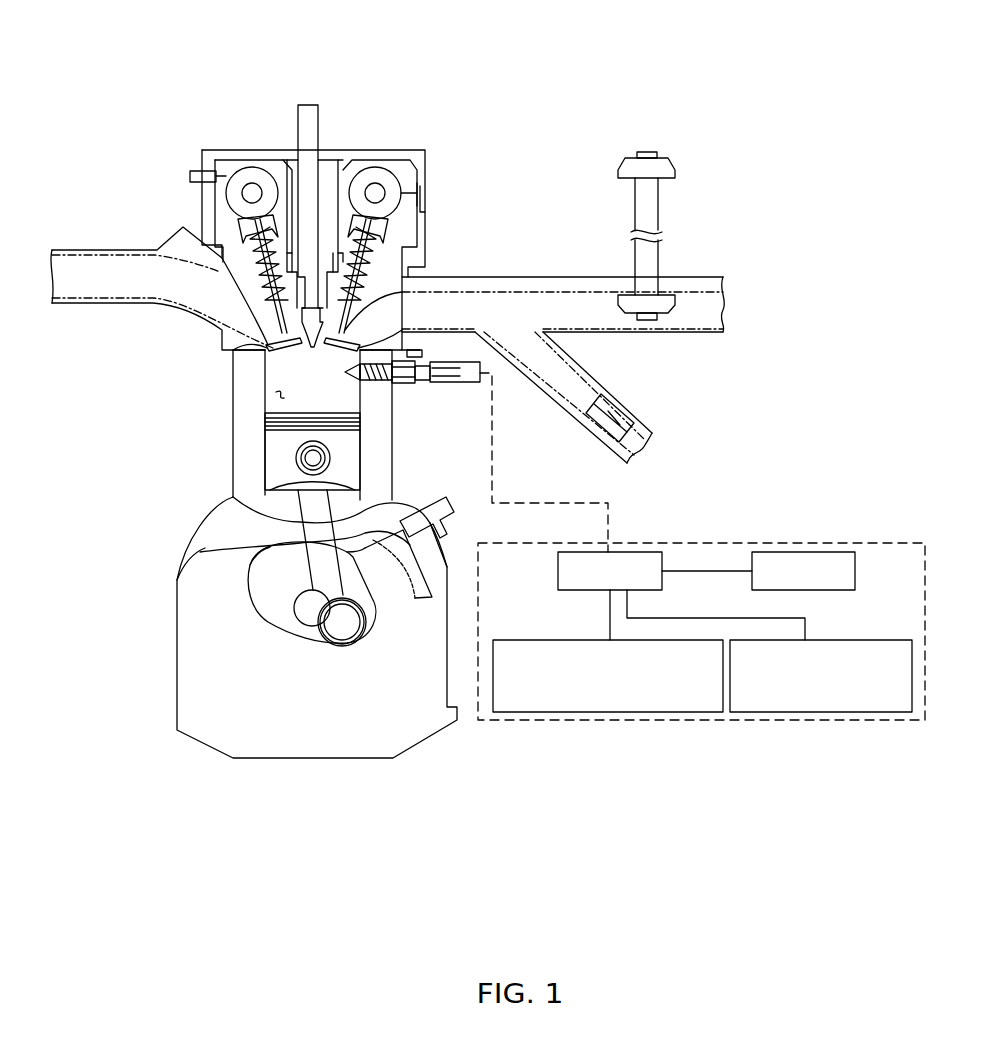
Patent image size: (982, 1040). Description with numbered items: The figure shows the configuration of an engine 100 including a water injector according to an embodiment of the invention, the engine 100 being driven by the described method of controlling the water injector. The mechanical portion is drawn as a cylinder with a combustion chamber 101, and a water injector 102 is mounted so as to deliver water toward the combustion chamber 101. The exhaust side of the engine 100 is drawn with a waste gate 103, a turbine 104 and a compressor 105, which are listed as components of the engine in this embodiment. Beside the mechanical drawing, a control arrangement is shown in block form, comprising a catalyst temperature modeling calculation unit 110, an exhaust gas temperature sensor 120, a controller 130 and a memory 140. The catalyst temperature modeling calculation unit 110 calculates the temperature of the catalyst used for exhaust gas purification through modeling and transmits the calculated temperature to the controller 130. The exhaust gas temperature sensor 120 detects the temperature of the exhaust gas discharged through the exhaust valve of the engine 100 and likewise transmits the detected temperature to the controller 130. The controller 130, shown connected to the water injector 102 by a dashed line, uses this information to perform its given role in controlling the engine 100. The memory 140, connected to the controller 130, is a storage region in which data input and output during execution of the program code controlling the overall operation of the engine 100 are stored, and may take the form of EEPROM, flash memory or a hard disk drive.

The engine 100 is at (388, 392).
The combustion chamber 101 is at (265, 398).
The water injector 102 is at (378, 383).
The waste gate 103 is at (588, 417).
The turbine 104 is at (620, 303).
The compressor 105 is at (620, 172).
The catalyst temperature modeling calculation unit 110 is at (610, 712).
The exhaust gas temperature sensor 120 is at (823, 712).
The controller 130 is at (630, 552).
The memory 140 is at (822, 552).